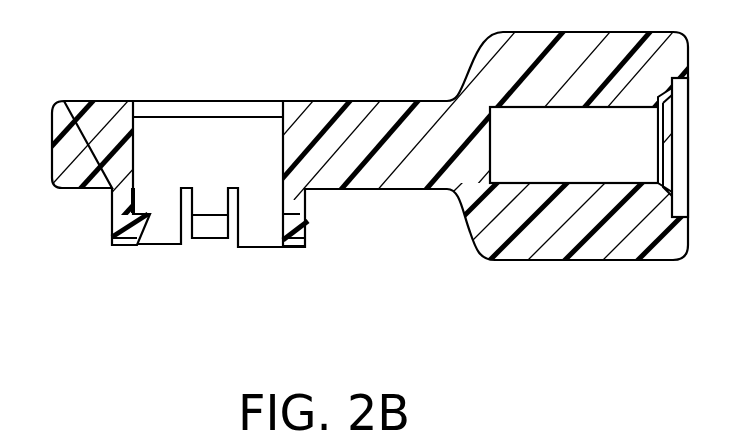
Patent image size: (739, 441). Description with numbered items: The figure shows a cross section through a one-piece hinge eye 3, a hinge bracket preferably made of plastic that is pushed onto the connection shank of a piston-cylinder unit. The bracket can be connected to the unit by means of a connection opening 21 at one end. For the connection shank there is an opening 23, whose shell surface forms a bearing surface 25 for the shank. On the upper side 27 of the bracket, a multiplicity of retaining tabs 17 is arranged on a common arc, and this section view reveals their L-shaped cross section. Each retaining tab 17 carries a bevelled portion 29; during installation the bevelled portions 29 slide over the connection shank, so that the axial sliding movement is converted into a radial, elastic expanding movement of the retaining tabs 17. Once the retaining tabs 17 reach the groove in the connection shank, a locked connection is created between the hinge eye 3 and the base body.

The hinge eye 3 is at (514, 299).
The retaining tabs 17 is at (131, 230).
The connection opening 21 is at (554, 183).
The opening 23 is at (248, 128).
The bearing surface 25 is at (138, 135).
The upper side 27 is at (372, 191).
The bevelled portions 29 is at (272, 222).